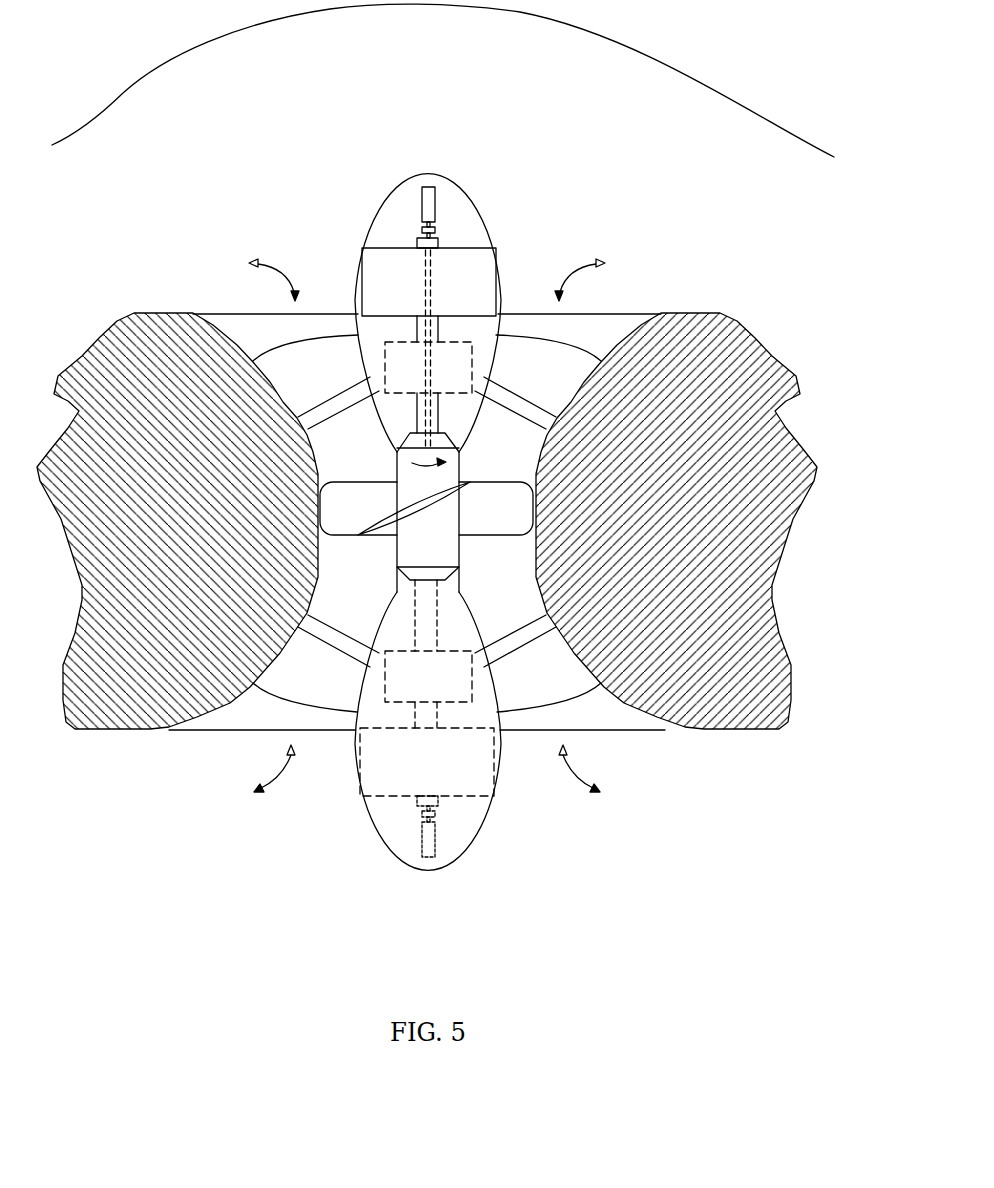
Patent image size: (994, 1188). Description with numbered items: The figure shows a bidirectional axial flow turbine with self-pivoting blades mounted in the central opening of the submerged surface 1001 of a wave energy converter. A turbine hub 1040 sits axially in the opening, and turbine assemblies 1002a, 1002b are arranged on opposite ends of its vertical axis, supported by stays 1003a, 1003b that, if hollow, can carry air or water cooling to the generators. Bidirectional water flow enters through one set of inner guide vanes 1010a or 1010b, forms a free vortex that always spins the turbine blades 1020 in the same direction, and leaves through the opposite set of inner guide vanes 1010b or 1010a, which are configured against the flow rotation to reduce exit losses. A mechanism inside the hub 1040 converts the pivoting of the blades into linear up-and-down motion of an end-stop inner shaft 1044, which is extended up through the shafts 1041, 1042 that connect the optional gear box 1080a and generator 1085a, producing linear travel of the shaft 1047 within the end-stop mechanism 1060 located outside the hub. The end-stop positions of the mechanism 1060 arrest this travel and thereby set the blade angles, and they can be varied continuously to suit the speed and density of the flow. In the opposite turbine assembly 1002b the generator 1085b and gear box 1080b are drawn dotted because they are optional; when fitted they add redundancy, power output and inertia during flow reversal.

The submerged surface 1001 is at (198, 521).
The turbine blades 1020 is at (282, 455).
The turbine hub 1040 is at (574, 412).
The turbine assembly 1002a is at (421, 263).
The turbine assembly 1002b is at (419, 775).
The stay 1003a is at (257, 330).
The stay 1003b is at (381, 724).
The inner guide vanes 1010a is at (443, 520).
The inner guide vanes 1010b is at (515, 642).
The shaft 1041 is at (420, 408).
The shaft 1042 is at (417, 305).
The end-stop inner shaft 1044 is at (420, 325).
The shaft 1047 is at (417, 223).
The end-stop mechanism 1060 is at (430, 212).
The gear box 1080a is at (448, 367).
The gear box 1080b is at (432, 683).
The generator 1085a is at (450, 280).
The generator 1085b is at (430, 762).